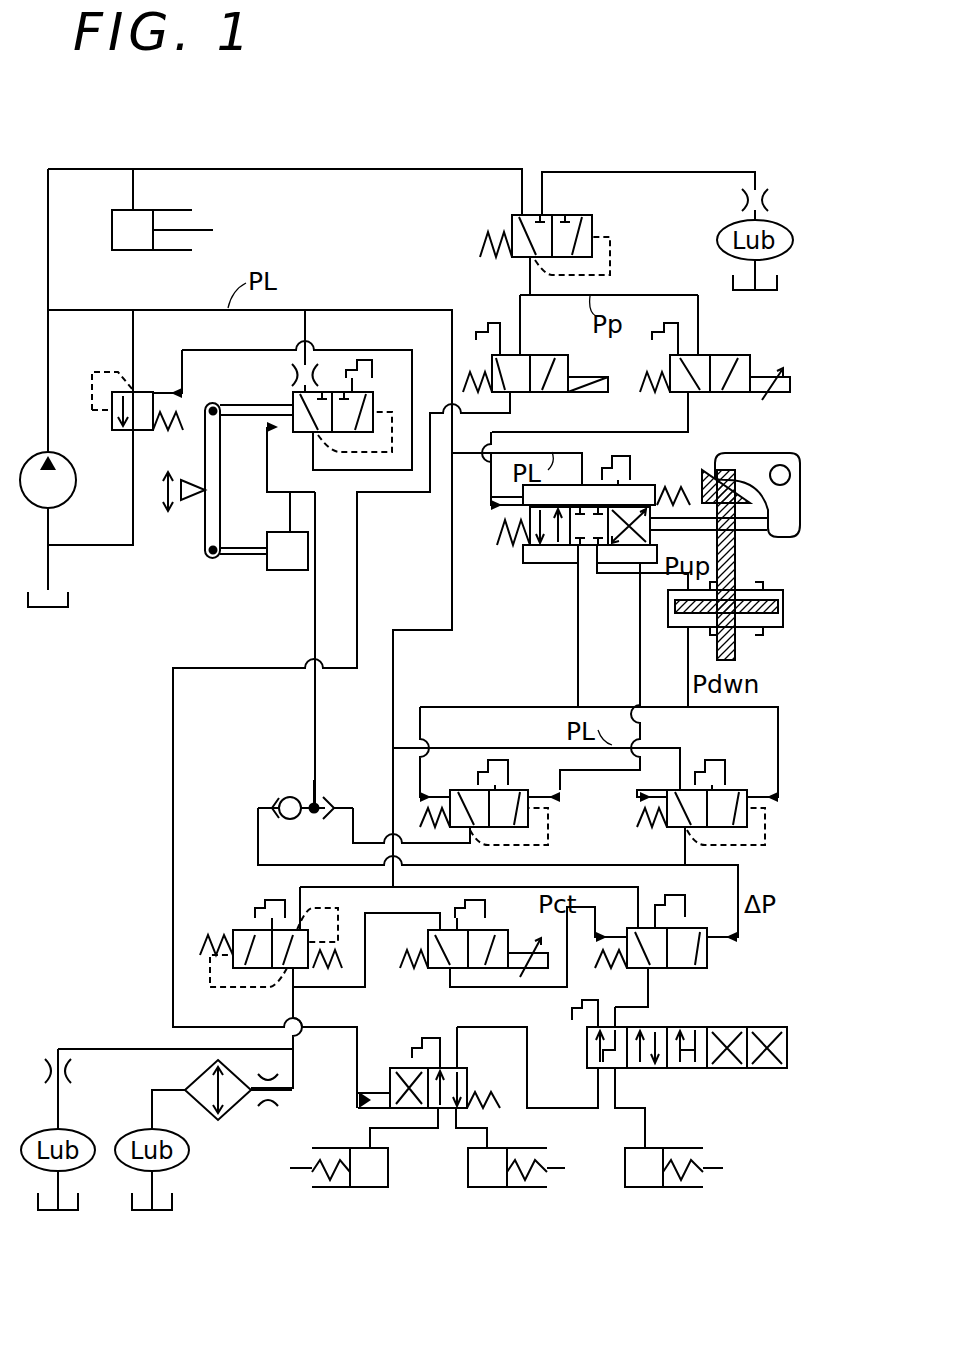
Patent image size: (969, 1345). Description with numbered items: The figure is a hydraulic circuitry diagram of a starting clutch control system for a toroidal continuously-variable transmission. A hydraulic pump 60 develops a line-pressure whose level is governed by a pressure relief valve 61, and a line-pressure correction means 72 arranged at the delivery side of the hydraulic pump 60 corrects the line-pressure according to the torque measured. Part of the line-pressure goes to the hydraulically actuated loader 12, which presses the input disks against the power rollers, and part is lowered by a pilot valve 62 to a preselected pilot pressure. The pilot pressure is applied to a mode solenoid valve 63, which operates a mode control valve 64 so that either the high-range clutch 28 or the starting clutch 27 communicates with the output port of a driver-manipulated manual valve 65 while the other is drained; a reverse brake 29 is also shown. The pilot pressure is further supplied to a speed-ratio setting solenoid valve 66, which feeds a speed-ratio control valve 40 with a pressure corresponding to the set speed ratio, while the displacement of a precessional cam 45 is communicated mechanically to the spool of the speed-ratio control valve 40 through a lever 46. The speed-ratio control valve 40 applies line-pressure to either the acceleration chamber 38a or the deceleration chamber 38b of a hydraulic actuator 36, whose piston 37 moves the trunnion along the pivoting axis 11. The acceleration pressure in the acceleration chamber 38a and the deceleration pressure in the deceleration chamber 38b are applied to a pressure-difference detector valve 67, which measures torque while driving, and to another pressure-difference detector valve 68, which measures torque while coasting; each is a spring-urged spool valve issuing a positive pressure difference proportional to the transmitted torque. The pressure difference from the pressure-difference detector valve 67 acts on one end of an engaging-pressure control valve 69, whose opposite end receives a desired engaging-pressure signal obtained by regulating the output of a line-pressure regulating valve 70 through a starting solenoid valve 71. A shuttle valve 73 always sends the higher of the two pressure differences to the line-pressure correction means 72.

The pivoting axis 11 is at (728, 660).
The hydraulically actuated loader 12 is at (124, 254).
The starting clutch 27 is at (492, 1190).
The high-range clutch 28 is at (368, 1190).
The reverse brake 29 is at (648, 1190).
The hydraulic actuator 36 is at (799, 592).
The piston 37 is at (778, 610).
The acceleration chamber 38a is at (757, 592).
The deceleration chamber 38b is at (757, 625).
The speed-ratio control valve 40 is at (540, 578).
The precessional cam 45 is at (701, 482).
The lever 46 is at (770, 460).
The hydraulic pump 60 is at (40, 508).
The pressure relief valve 61 is at (111, 432).
The pilot valve 62 is at (593, 216).
The mode solenoid valve 63 is at (545, 357).
The mode control valve 64 is at (397, 1068).
The manual valve 65 is at (660, 1026).
The speed-ratio setting solenoid valve 66 is at (735, 357).
The pressure-difference detector valve 67 is at (735, 790).
The pressure-difference detector valve 68 is at (520, 790).
The engaging-pressure control valve 69 is at (698, 922).
The line-pressure regulating valve 70 is at (243, 928).
The starting solenoid valve 71 is at (497, 932).
The line-pressure correction means 72 is at (191, 553).
The shuttle valve 73 is at (312, 800).